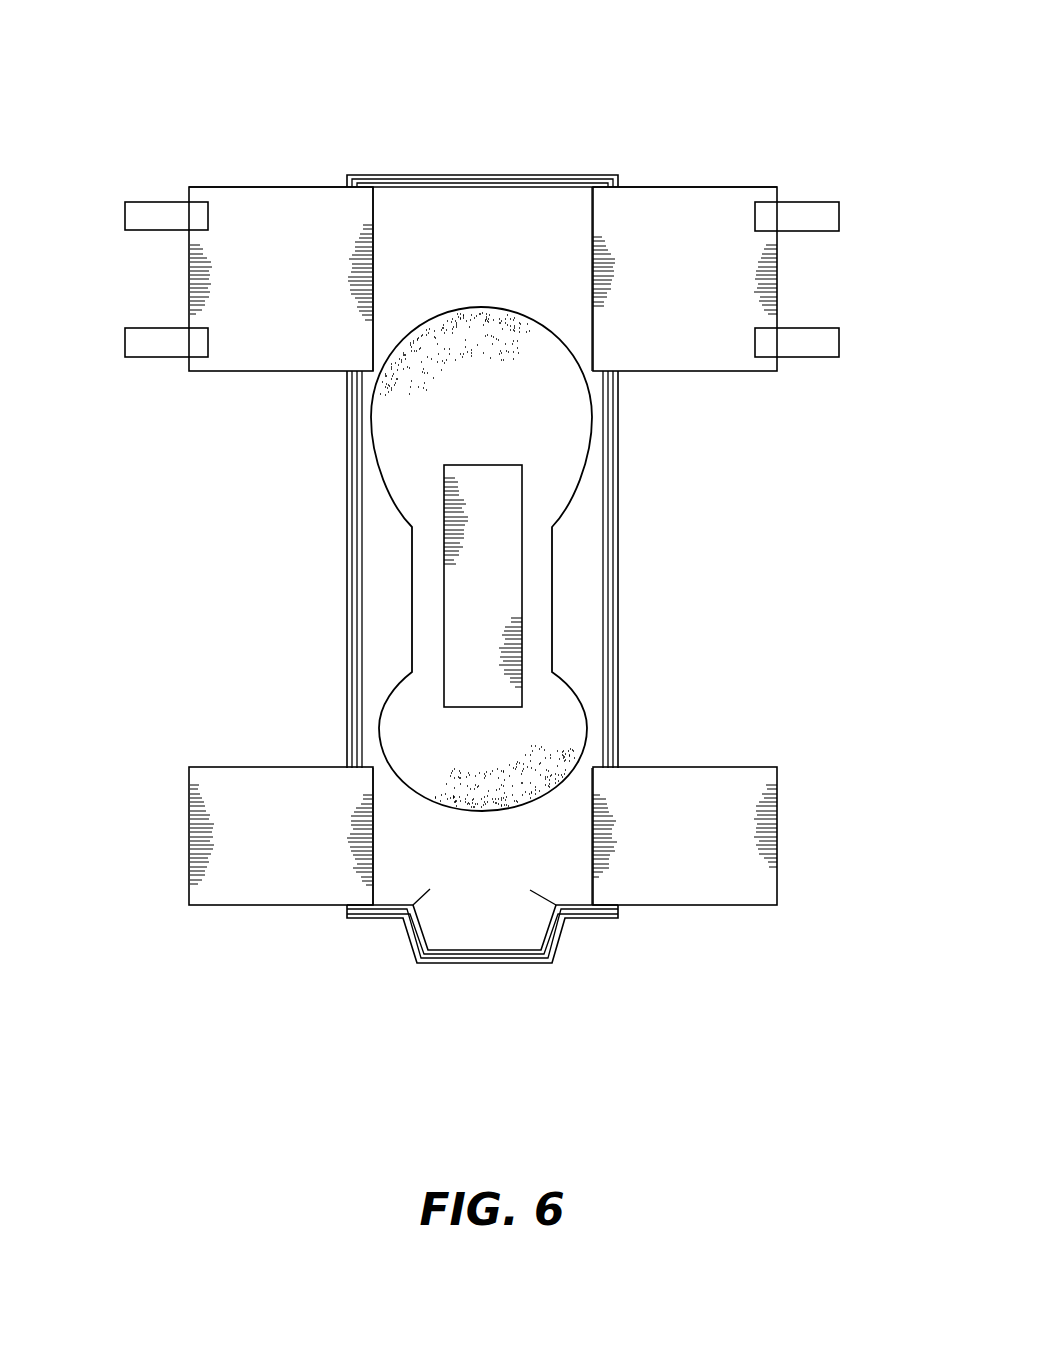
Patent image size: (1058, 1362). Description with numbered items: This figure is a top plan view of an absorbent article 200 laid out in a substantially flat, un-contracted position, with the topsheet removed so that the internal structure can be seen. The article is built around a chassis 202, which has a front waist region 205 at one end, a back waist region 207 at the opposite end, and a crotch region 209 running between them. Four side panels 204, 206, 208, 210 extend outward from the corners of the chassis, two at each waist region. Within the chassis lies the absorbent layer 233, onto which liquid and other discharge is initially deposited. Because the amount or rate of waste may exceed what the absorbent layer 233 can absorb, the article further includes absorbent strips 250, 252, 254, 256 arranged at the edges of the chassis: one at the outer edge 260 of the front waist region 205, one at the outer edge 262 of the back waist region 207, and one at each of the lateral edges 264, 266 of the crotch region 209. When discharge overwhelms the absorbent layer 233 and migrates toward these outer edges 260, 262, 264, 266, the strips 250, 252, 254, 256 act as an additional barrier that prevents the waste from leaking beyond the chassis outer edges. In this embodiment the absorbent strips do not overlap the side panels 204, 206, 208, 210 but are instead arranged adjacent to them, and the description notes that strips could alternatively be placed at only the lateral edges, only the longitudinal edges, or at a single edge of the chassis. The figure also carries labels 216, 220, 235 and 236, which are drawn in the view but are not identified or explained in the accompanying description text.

The absorbent article 200 is at (790, 112).
The chassis 202 is at (620, 620).
The side panel 204 is at (673, 213).
The front waist region 205 is at (410, 917).
The side panel 206 is at (277, 205).
The back waist region 207 is at (398, 208).
The side panel 208 is at (222, 892).
The crotch region 209 is at (347, 462).
The side panel 210 is at (742, 892).
The absorbent core 216 is at (511, 327).
The fastening tabs 220 is at (135, 215).
The absorbent layer 233 is at (493, 542).
The back waist edge 235 is at (475, 963).
The second side edge 236 is at (562, 923).
The absorbent strip 250 is at (437, 963).
The absorbent strip 252 is at (477, 175).
The absorbent strip 254 is at (360, 575).
The absorbent strip 256 is at (617, 457).
The outer edge of the front waist region 260 is at (542, 963).
The outer edge of the back waist region 262 is at (440, 183).
The lateral edge of the crotch region 264 is at (347, 690).
The lateral edge of the crotch region 266 is at (620, 697).